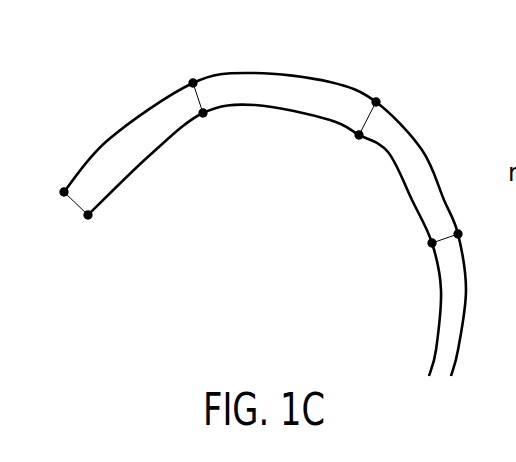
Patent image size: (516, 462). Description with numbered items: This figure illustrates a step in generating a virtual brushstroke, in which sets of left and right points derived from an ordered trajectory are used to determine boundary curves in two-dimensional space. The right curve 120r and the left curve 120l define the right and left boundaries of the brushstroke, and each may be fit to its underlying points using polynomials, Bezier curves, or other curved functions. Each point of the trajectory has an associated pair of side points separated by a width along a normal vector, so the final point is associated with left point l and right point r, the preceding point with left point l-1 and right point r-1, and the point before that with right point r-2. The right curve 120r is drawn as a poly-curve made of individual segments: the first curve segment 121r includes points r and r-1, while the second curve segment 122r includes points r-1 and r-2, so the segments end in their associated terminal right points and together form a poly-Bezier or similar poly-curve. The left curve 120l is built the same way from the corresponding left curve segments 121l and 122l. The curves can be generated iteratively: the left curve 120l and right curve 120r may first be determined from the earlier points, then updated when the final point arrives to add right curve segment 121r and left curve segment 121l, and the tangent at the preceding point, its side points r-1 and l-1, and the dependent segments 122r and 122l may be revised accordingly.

The right curve 120r is at (335, 82).
The left curve 120l is at (402, 175).
The first curve segment 121r is at (120, 122).
The left curve segment 121l is at (156, 173).
The second curve segment 122r is at (285, 67).
The left curve segment 122l is at (267, 113).
The right point r is at (54, 177).
The left point l is at (94, 227).
The right point r-1 is at (192, 66).
The left point l-1 is at (208, 133).
The right point r-2 is at (384, 86).